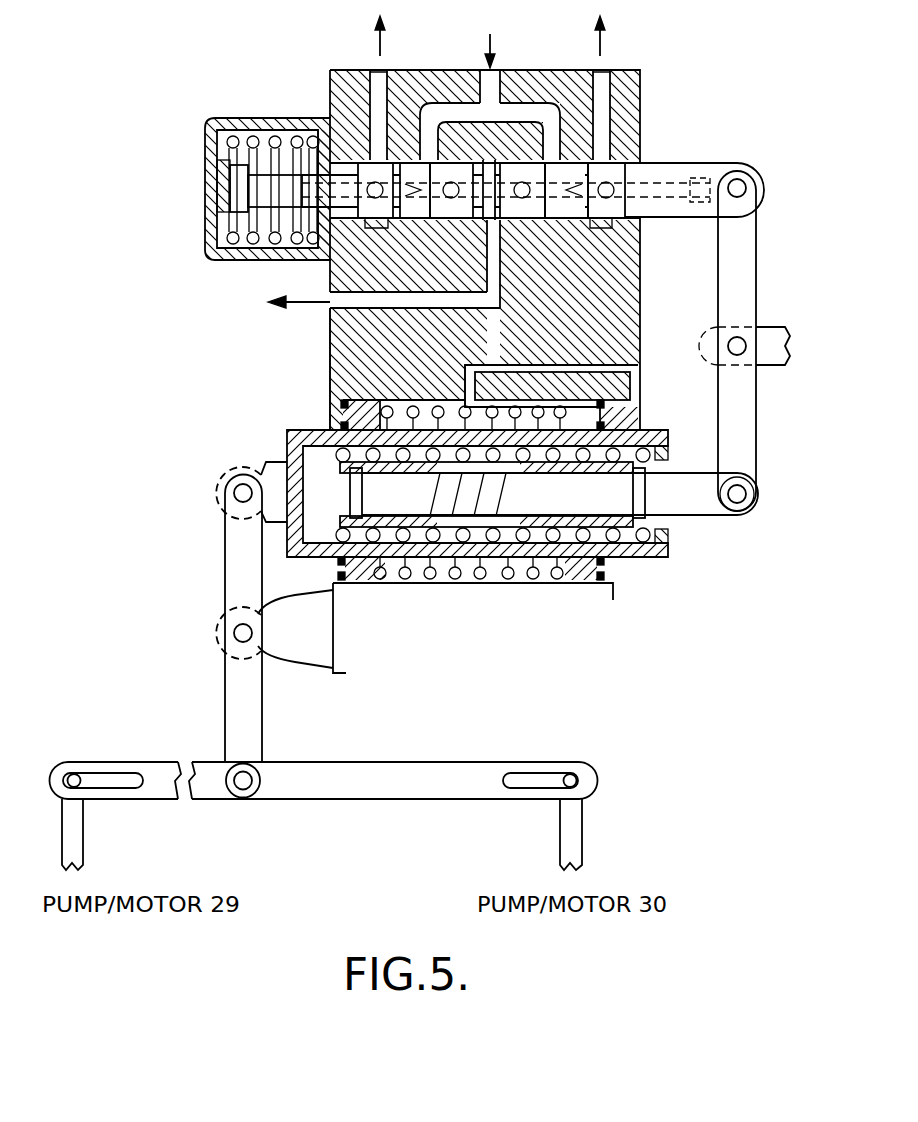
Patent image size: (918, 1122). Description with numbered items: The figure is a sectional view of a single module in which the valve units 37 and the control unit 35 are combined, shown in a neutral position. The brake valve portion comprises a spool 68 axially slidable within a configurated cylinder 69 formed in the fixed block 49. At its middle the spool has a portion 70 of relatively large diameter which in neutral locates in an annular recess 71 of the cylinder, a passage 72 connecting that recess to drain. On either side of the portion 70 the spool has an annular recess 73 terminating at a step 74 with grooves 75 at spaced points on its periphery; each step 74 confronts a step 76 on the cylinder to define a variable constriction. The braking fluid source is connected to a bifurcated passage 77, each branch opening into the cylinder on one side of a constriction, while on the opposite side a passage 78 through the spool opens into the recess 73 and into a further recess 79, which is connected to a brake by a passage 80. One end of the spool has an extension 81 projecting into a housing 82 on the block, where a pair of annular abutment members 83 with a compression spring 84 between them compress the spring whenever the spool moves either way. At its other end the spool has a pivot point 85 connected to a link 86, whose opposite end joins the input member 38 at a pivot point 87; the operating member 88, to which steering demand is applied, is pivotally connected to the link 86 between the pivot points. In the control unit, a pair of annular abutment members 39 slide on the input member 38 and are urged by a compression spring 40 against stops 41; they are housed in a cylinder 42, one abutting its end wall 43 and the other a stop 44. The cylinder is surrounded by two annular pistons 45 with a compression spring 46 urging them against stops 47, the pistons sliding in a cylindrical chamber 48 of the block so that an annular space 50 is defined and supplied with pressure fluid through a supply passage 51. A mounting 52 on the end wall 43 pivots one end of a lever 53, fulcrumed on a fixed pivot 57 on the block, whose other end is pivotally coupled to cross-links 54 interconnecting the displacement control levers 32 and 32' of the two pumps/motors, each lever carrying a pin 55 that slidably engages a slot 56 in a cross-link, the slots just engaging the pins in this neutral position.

The displacement control lever 32 is at (115, 839).
The displacement control lever 32' is at (608, 834).
The control unit 35 is at (286, 424).
The valve unit 37 is at (297, 88).
The input member 38 is at (700, 512).
The annular abutment member 39 is at (337, 556).
The compression spring 40 is at (465, 580).
The stop 41 is at (358, 518).
The cylinder 42 is at (648, 440).
The end wall 43 is at (292, 452).
The stop 44 is at (650, 449).
The annular piston 45 is at (373, 402).
The compression spring 46 is at (434, 407).
The stop 47 is at (343, 425).
The cylindrical chamber 48 is at (400, 400).
The fixed block 49 is at (330, 348).
The annular space 50 is at (497, 420).
The supply passage 51 is at (537, 373).
The mounting 52 is at (230, 490).
The lever 53 is at (232, 570).
The cross-link 54 is at (323, 777).
The pin 55 is at (85, 773).
The slot 56 is at (110, 788).
The fixed pivot 57 is at (238, 633).
The spool 68 is at (348, 208).
The configurated cylinder 69 is at (433, 228).
The large-diameter portion 70 is at (487, 162).
The annular recess 71 is at (498, 222).
The passage 72 is at (498, 296).
The annular recess 73 is at (447, 165).
The step 74 is at (443, 208).
The groove 75 is at (430, 187).
The step 76 is at (421, 124).
The bifurcated passage 77 is at (502, 78).
The passage 78 is at (410, 212).
The further recess 79 is at (370, 160).
The passage 80 is at (374, 105).
The extension 81 is at (272, 193).
The housing 82 is at (218, 247).
The annular abutment member 83 is at (223, 227).
The compression spring 84 is at (243, 118).
The pivot point 85 is at (737, 180).
The link 86 is at (732, 280).
The pivot point 87 is at (742, 504).
The operating member 88 is at (778, 360).